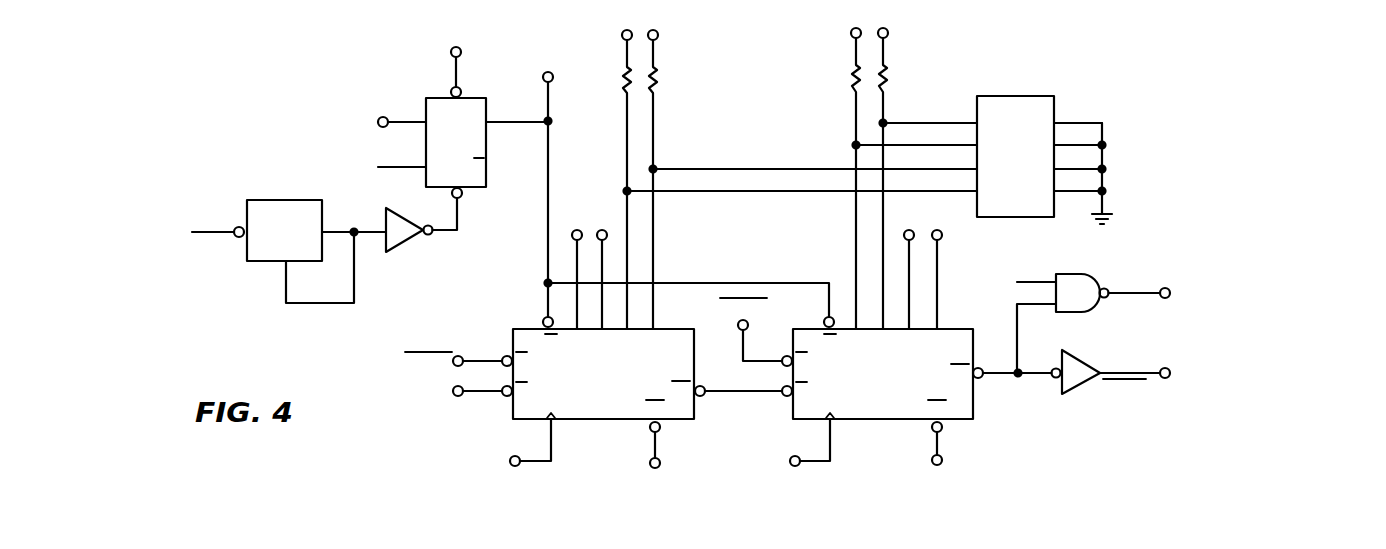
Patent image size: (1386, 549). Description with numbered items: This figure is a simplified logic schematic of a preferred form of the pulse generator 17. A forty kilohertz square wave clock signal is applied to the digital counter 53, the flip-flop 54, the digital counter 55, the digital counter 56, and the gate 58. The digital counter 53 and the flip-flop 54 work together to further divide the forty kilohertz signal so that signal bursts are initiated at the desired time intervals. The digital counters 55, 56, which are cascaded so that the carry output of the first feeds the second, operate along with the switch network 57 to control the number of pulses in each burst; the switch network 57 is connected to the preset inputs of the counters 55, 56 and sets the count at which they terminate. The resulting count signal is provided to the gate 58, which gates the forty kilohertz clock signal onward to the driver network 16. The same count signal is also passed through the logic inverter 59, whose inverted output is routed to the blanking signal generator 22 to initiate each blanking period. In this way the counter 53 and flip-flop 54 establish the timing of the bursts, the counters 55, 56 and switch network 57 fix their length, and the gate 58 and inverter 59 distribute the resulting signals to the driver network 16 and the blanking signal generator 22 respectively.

The digital counter 53 is at (280, 200).
The flip-flop 54 is at (478, 187).
The pulse generator 17 is at (772, 244).
The digital counter 55 is at (603, 419).
The digital counter 56 is at (885, 419).
The switch network 57 is at (1013, 100).
The gate 58 is at (1117, 306).
The logic inverter 59 is at (1199, 362).
The driver network 16 is at (1217, 293).
The blanking signal generator 22 is at (1252, 361).